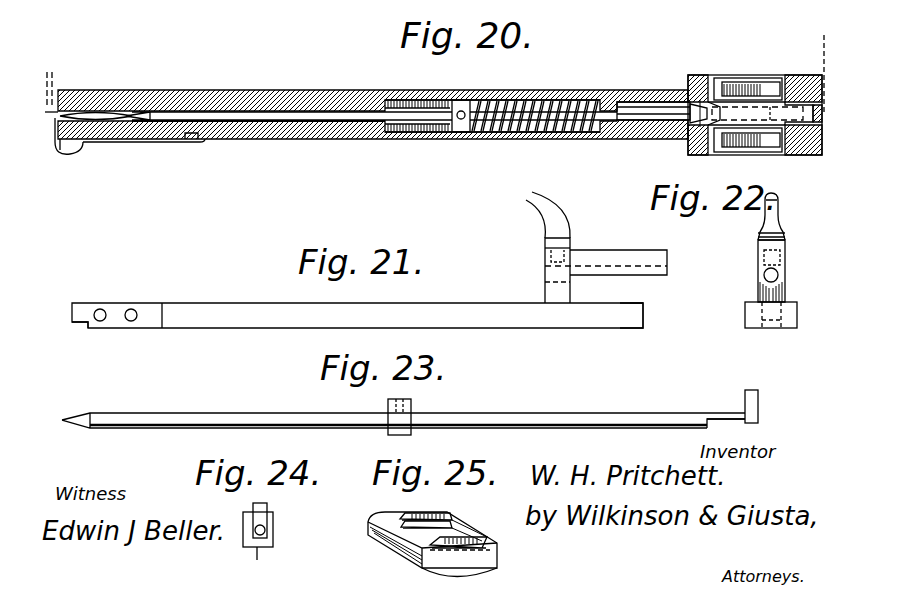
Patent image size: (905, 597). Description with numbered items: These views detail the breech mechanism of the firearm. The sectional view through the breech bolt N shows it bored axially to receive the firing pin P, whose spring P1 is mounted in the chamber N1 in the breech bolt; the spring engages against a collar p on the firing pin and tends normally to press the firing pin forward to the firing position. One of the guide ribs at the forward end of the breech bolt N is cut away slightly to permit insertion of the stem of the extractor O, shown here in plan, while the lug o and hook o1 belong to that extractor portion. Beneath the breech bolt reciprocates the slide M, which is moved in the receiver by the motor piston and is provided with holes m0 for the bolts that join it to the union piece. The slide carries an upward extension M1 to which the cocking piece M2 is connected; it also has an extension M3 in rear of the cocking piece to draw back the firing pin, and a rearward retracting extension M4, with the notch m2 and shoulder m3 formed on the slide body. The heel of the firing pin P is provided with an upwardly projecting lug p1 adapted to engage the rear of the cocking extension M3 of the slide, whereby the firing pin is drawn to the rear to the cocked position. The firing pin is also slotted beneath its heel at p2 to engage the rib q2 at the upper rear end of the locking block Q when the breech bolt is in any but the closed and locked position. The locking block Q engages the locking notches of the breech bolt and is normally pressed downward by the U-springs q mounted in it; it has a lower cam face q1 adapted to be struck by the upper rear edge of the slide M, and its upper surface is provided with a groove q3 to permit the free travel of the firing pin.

In FIG. 20, the breech bolt N is at (268, 90).
In FIG. 20, the chamber N1 is at (410, 132).
In FIG. 20, the firing pin P is at (366, 110).
In FIG. 23, the firing pin P is at (266, 413).
In FIG. 24, the firing pin P is at (257, 547).
In FIG. 20, the collar p is at (462, 100).
In FIG. 23, the collar p is at (411, 400).
In FIG. 24, the collar p is at (273, 530).
In FIG. 20, the spring P1 is at (524, 100).
In FIG. 20, the lug p1 is at (810, 110).
In FIG. 23, the lug p1 is at (758, 398).
In FIG. 24, the lug p1 is at (268, 505).
In FIG. 23, the slot p2 is at (720, 413).
In FIG. 20, the locking block Q is at (716, 75).
In FIG. 25, the locking block Q is at (395, 545).
In FIG. 21, the slide M is at (232, 328).
In FIG. 22, the slide M is at (746, 316).
In FIG. 21, the upward extension M1 is at (558, 298).
In FIG. 22, the upward extension M1 is at (758, 292).
In FIG. 20, the cocking piece M2 is at (684, 105).
In FIG. 21, the cocking piece M2 is at (532, 196).
In FIG. 22, the cocking piece M2 is at (780, 207).
In FIG. 20, the extension M3 is at (744, 103).
In FIG. 21, the extension M3 is at (617, 250).
In FIG. 22, the extension M3 is at (758, 262).
In FIG. 21, the rearward retracting extension M4 is at (624, 328).
In FIG. 21, the holes m0 is at (130, 309).
In FIG. 21, the notch m2 is at (76, 328).
In FIG. 21, the shoulder m3 is at (643, 303).
In FIG. 20, the extractor O is at (108, 142).
In FIG. 20, the lug o is at (55, 142).
In FIG. 20, the hook o1 is at (70, 155).
In FIG. 25, the U-springs q is at (442, 513).
In FIG. 25, the lower cam face q1 is at (455, 578).
In FIG. 25, the rib q2 is at (460, 530).
In FIG. 25, the groove q3 is at (369, 535).